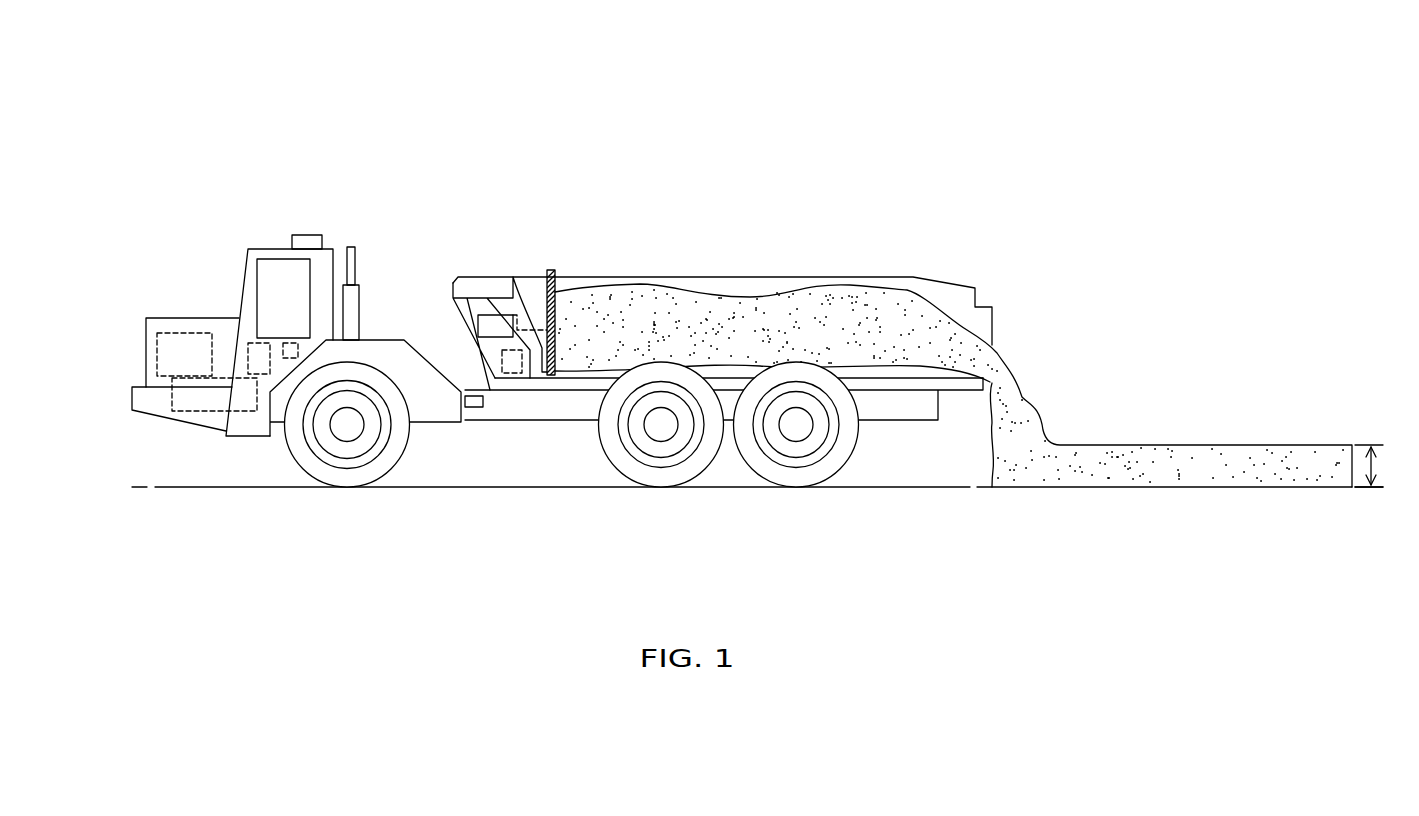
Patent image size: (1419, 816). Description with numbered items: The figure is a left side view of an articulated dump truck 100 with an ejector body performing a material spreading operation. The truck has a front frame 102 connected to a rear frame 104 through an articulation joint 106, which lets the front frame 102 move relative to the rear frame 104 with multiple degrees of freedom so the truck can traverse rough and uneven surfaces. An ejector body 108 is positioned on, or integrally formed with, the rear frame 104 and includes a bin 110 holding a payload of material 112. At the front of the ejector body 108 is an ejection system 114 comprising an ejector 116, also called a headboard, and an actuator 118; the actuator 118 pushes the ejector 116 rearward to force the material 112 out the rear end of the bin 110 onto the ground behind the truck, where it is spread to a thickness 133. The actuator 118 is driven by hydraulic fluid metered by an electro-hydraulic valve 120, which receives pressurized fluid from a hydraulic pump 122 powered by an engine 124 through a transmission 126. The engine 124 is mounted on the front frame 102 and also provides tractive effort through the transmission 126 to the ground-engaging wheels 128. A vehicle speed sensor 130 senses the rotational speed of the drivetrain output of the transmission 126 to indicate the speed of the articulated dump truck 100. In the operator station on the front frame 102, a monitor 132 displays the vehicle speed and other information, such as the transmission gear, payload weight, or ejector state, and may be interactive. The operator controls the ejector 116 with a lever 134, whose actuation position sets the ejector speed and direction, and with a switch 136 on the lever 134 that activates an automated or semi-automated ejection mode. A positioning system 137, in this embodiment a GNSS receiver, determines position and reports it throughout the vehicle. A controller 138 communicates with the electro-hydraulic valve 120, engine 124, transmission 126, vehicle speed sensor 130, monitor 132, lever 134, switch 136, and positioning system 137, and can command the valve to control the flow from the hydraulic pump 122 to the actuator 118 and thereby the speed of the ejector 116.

The articulated dump truck 100 is at (630, 77).
The front frame 102 is at (427, 438).
The rear frame 104 is at (537, 432).
The articulation joint 106 is at (472, 433).
The ejector body 108 is at (845, 262).
The bin 110 is at (752, 283).
The material 112 is at (645, 332).
The ejection system 114 is at (530, 267).
The ejector 116 is at (556, 291).
The actuator 118 is at (488, 327).
The electro-hydraulic valve 120 is at (502, 358).
The hydraulic pump 122 is at (243, 412).
The engine 124 is at (182, 333).
The transmission 126 is at (188, 414).
The ground-engaging wheels 128 is at (327, 470).
The vehicle speed sensor 130 is at (263, 376).
The monitor 132 is at (258, 318).
The thickness 133 is at (1373, 465).
The lever 134 is at (263, 302).
The switch 136 is at (272, 293).
The positioning system 137 is at (300, 235).
The controller 138 is at (290, 343).